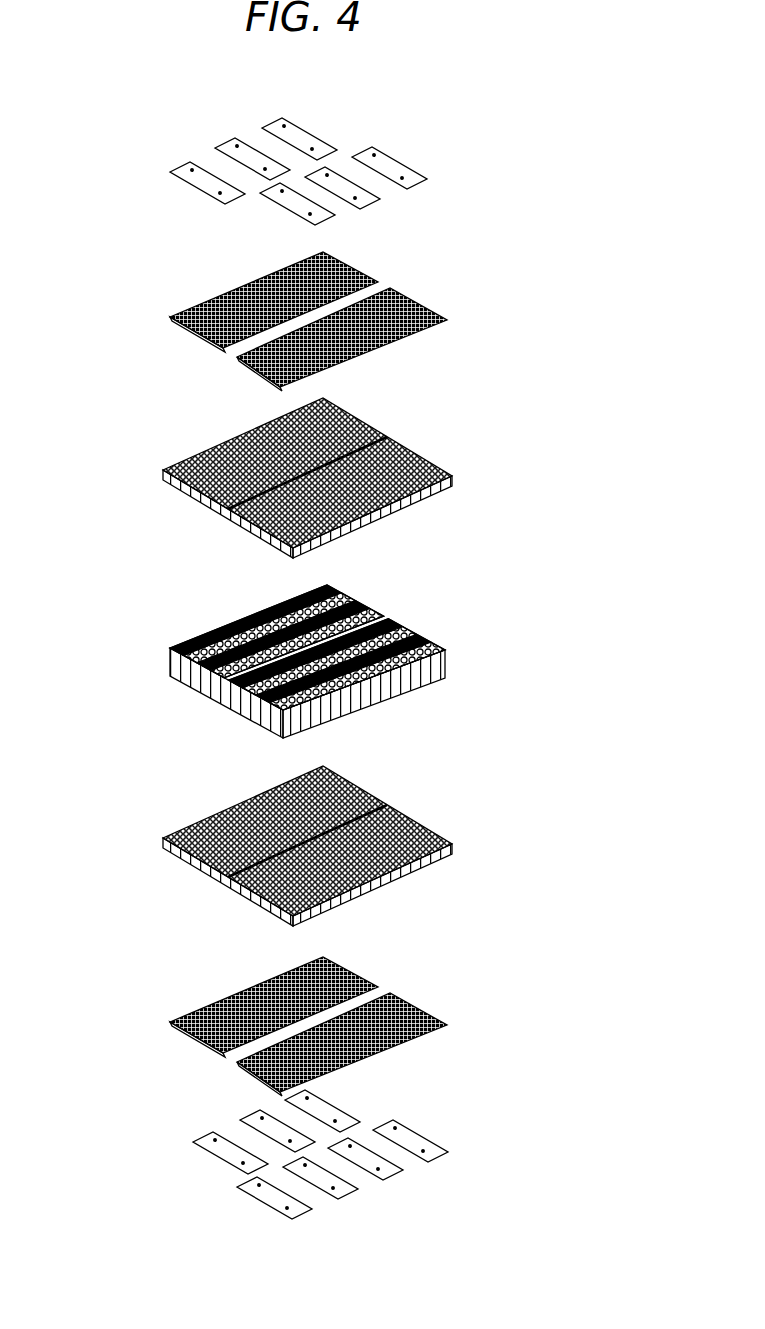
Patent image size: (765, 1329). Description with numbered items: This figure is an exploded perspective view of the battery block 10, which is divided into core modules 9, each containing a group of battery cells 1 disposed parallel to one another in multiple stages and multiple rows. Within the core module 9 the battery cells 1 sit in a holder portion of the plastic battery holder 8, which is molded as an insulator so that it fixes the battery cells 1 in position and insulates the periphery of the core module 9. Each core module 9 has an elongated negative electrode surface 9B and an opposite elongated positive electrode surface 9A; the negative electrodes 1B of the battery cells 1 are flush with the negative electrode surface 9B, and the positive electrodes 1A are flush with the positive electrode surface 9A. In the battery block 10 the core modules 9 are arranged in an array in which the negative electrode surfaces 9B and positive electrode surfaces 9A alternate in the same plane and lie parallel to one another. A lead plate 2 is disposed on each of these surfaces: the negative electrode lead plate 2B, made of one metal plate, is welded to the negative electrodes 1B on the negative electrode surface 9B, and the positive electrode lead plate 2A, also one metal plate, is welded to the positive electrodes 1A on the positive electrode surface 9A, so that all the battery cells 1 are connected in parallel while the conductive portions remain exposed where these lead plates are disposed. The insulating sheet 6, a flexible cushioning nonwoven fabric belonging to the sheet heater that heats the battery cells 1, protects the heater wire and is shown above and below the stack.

The battery cell 1 is at (314, 657).
The positive electrode 1A is at (440, 650).
The negative electrode 1B is at (180, 648).
The lead plate 2 is at (295, 663).
The positive electrode lead plate 2A is at (221, 300).
The negative electrode lead plate 2B is at (195, 343).
The insulating sheet 6 is at (183, 168).
The battery holder 8 is at (437, 442).
The core module 9 is at (170, 692).
The positive electrode surface 9A is at (232, 647).
The negative electrode surface 9B is at (186, 648).
The battery block 10 is at (318, 653).